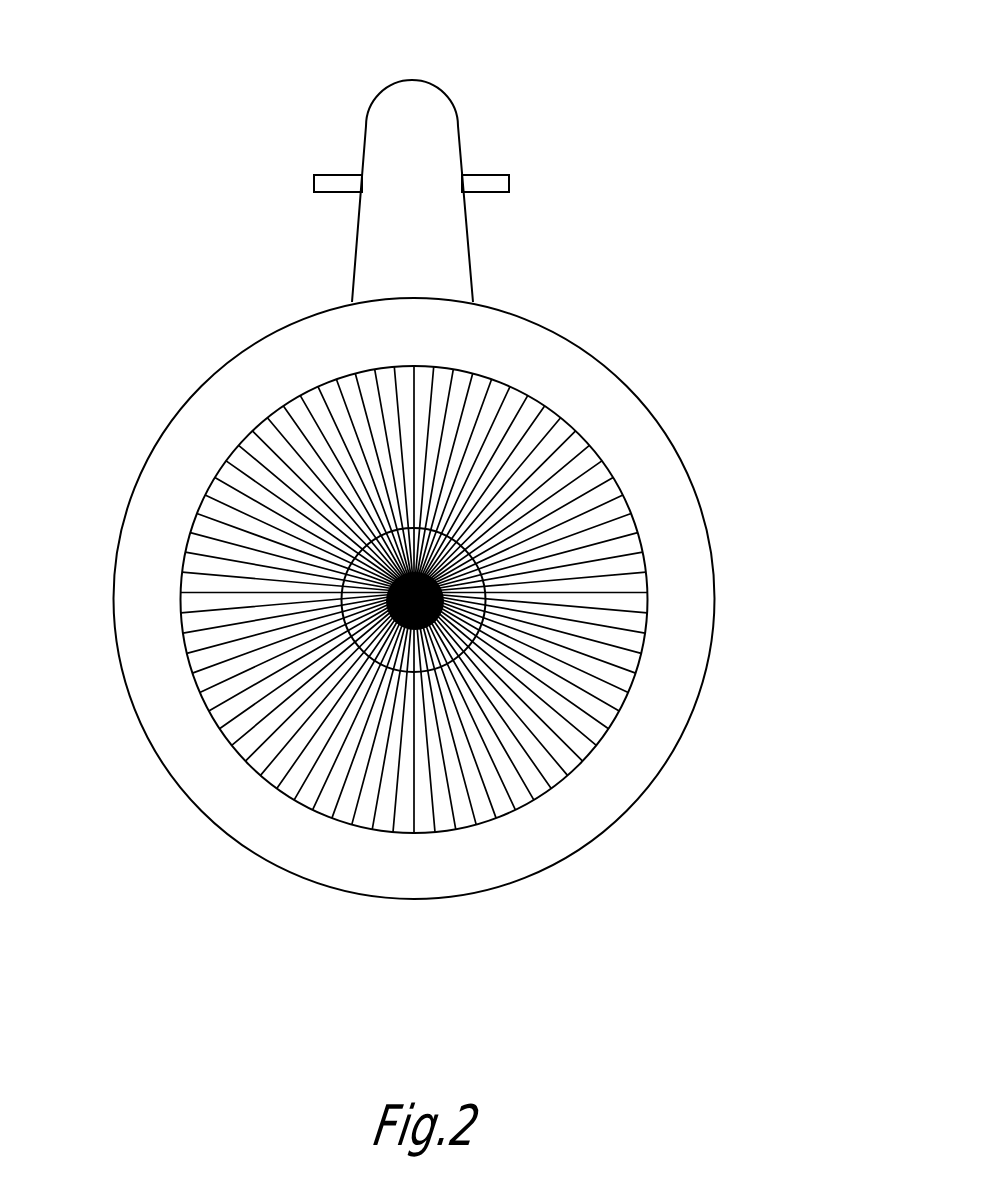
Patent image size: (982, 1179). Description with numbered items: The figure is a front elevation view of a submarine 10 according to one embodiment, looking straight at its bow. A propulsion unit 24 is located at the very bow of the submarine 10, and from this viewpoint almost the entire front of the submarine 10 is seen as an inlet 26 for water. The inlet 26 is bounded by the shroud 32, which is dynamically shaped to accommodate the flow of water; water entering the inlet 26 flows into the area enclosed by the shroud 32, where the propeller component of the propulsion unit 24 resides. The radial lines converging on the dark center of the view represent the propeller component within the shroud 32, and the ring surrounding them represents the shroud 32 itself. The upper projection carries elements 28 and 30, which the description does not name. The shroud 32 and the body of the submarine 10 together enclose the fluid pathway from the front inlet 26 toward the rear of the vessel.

The submarine 10 is at (203, 323).
The propulsion unit 24 is at (720, 598).
The inlet 26 is at (550, 495).
The mounting tabs 28 is at (337, 173).
The stem handle 30 is at (418, 97).
The shroud 32 is at (705, 518).